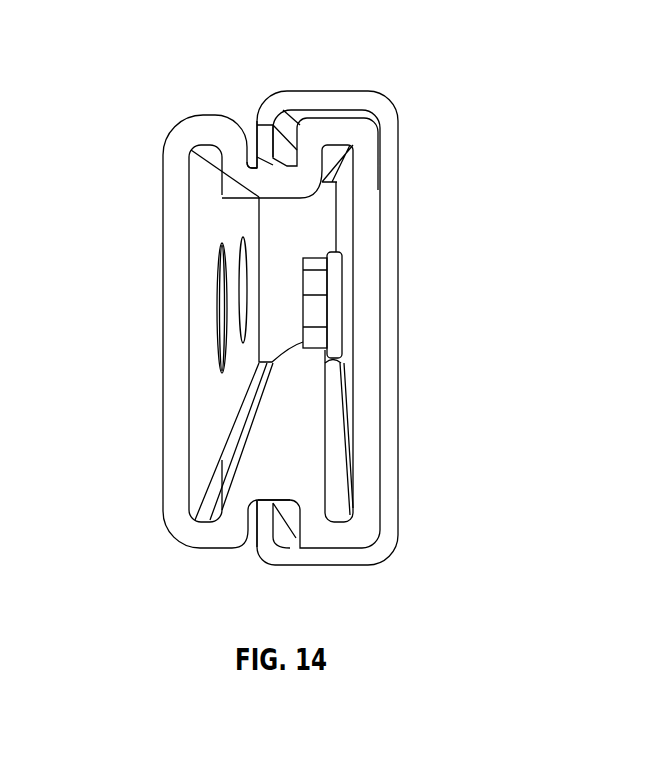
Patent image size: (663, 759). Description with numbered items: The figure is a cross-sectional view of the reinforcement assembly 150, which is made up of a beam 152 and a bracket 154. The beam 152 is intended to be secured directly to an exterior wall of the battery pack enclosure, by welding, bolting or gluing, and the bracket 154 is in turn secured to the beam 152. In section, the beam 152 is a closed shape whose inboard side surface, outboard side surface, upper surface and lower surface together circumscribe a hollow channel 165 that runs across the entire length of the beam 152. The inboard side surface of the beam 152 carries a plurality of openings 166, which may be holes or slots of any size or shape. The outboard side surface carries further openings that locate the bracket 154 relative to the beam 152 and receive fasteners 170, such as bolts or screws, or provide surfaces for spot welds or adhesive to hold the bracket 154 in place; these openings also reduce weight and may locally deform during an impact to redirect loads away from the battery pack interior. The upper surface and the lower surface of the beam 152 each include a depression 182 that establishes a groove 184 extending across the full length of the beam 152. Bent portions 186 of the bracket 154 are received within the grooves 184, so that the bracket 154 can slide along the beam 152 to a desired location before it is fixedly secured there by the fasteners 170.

The reinforcement assembly 150 is at (458, 57).
The beam 152 is at (173, 213).
The bracket 154 is at (403, 186).
The hollow channel 165 is at (277, 241).
The plurality of openings 166 is at (242, 292).
The fasteners 170 is at (303, 266).
The depression 182 is at (204, 146).
The groove 184 is at (260, 168).
The bent portions 186 is at (263, 120).